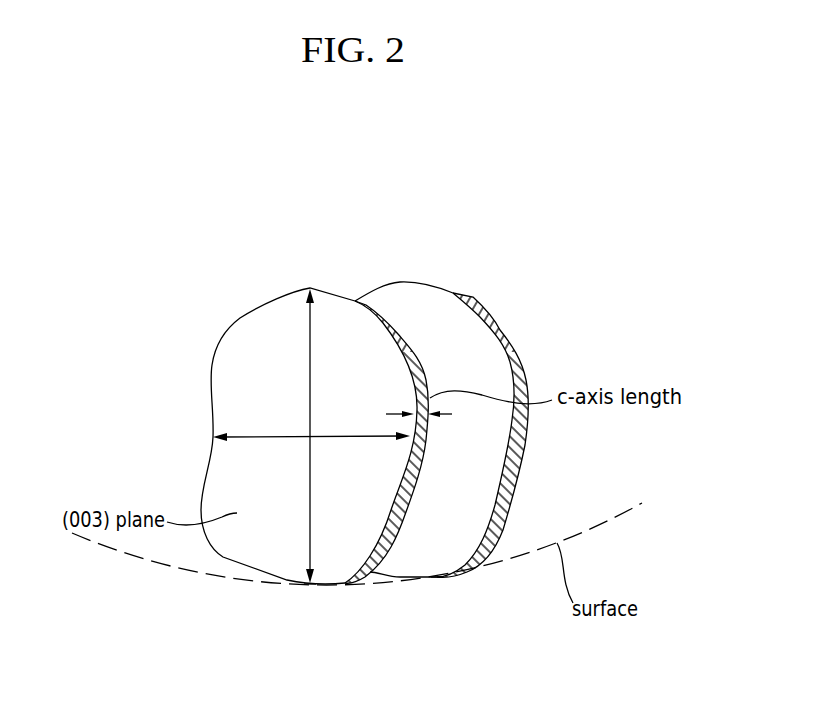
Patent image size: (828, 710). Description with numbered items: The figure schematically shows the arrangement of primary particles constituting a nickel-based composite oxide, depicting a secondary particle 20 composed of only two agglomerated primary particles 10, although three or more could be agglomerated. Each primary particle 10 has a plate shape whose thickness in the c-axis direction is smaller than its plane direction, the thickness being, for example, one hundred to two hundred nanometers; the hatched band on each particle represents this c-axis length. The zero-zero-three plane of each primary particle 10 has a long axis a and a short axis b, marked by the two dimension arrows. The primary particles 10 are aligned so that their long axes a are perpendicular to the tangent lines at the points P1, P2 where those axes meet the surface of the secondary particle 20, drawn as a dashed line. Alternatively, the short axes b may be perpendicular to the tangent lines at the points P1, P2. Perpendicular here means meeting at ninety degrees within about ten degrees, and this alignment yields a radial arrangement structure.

The secondary particle 20 is at (300, 207).
The primary particle 10 is at (280, 298).
The long axis (a-axis) a is at (310, 350).
The short axis (b-axis) b is at (250, 437).
The point P1 is at (308, 587).
The point P2 is at (437, 579).